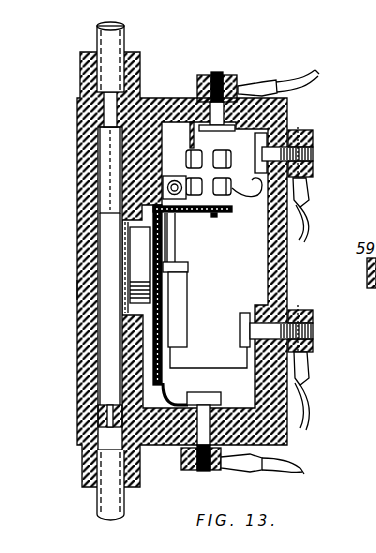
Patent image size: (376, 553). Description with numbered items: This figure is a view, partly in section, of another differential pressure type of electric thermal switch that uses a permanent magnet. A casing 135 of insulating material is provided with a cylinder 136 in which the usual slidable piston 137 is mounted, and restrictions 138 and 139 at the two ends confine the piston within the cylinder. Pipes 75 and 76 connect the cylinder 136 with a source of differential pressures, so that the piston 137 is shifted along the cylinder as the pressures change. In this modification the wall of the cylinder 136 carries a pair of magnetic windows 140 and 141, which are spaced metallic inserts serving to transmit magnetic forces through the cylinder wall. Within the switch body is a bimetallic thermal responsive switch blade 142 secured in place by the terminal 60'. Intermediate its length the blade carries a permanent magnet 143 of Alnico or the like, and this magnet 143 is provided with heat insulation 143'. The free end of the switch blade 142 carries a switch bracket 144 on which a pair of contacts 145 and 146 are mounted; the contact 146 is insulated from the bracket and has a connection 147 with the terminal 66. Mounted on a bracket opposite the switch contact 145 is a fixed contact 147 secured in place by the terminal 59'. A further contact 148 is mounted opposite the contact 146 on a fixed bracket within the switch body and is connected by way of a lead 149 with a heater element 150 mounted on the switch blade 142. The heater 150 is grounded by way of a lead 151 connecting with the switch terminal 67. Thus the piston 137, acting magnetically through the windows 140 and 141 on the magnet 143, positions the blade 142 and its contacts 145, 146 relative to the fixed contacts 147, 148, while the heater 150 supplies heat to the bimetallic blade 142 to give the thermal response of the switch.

The pipe 75 is at (125, 44).
The pipe 76 is at (125, 503).
The restriction 138 is at (82, 117).
The slidable piston 137 is at (103, 162).
The magnetic window 140 is at (124, 240).
The permanent magnet 143 is at (99, 295).
The casing 135 is at (78, 290).
The magnetic window 141 is at (125, 293).
The cylinder 136 is at (98, 351).
The restriction 139 is at (82, 423).
The contact 147 is at (192, 157).
The contact 145 is at (218, 150).
The contact 146 is at (232, 210).
The contact 148 is at (214, 215).
The switch bracket 144 is at (195, 218).
The lead 149 is at (175, 259).
The heat insulation 143' is at (195, 250).
The heater element 150 is at (187, 306).
The lead 151 is at (227, 370).
The bimetallic thermal responsive switch blade 142 is at (168, 384).
The terminal 59' is at (258, 89).
The terminal 60' is at (242, 446).
The terminal 66 is at (312, 158).
The switch terminal 67 is at (313, 333).